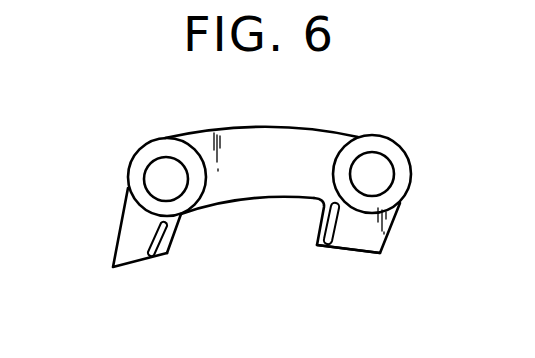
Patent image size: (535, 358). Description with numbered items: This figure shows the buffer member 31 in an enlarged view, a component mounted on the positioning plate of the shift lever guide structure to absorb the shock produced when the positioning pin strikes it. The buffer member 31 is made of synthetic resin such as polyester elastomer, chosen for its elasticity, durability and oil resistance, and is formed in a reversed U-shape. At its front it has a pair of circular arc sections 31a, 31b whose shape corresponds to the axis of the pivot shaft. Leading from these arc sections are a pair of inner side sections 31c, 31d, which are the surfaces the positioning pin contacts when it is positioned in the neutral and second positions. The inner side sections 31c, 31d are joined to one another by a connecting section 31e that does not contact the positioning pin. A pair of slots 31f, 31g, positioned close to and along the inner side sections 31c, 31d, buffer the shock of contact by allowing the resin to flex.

The buffer member 31 is at (345, 128).
The circular arc section 31a is at (120, 270).
The circular arc section 31b is at (372, 252).
The inner side section 31c is at (173, 240).
The inner side section 31d is at (318, 230).
The connecting section 31e is at (251, 200).
The slot 31f is at (146, 258).
The slot 31g is at (337, 250).